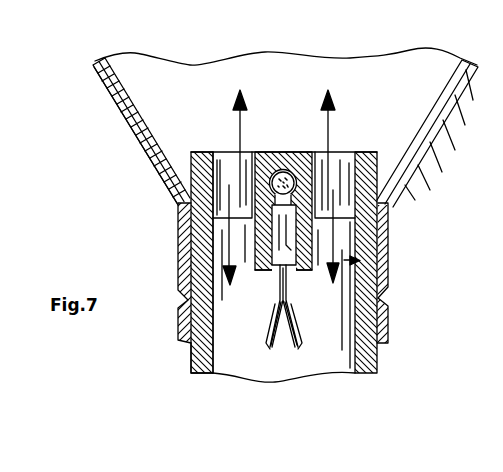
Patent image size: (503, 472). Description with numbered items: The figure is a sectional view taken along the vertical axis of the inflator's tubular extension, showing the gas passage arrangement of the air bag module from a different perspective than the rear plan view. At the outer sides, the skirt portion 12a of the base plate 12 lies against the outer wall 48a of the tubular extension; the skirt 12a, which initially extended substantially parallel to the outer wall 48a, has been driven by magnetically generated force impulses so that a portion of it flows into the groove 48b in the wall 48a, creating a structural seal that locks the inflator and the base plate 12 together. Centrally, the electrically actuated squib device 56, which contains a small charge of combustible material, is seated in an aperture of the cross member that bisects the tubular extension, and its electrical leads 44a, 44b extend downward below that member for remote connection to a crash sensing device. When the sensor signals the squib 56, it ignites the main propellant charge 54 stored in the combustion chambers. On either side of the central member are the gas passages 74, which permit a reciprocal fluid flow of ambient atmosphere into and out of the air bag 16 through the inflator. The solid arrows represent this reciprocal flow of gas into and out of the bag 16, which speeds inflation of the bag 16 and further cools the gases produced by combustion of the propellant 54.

The base plate 12 is at (152, 156).
The skirt portion 12a is at (390, 262).
The air bag 16 is at (123, 108).
The electrical lead 44a is at (272, 347).
The electrical lead 44b is at (298, 348).
The outer wall 48a is at (190, 359).
The groove 48b is at (213, 307).
The main propellant charge 54 is at (293, 168).
The squib device 56 is at (300, 252).
The gas passages 74 is at (223, 157).